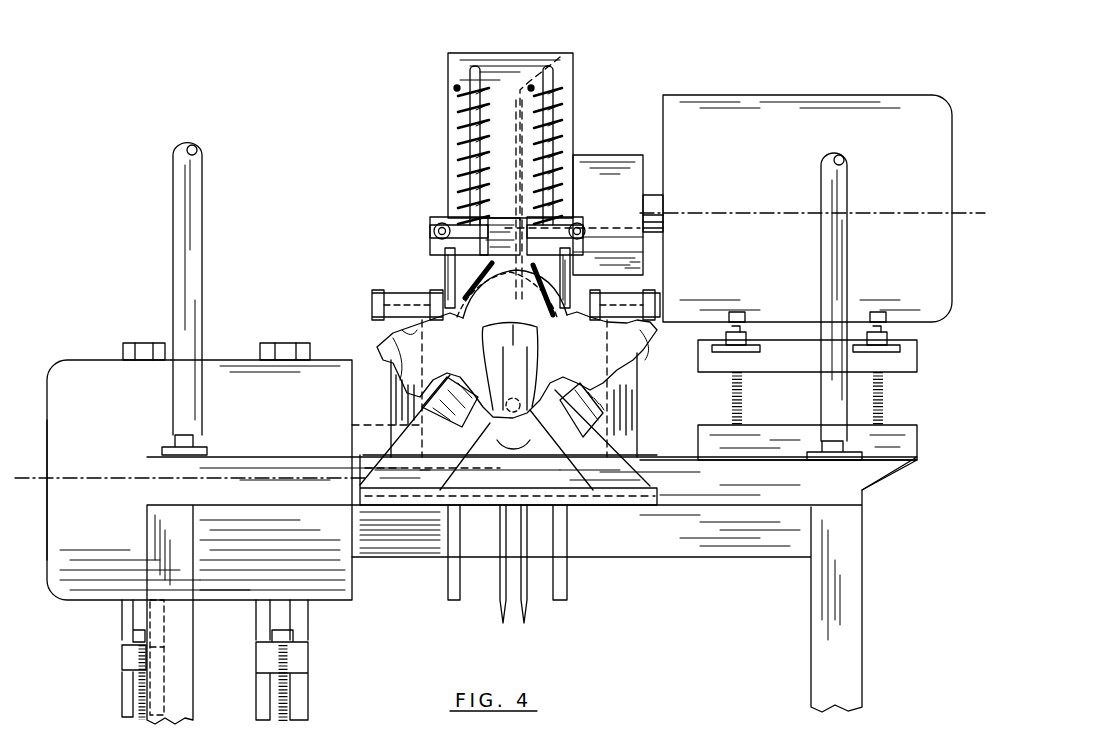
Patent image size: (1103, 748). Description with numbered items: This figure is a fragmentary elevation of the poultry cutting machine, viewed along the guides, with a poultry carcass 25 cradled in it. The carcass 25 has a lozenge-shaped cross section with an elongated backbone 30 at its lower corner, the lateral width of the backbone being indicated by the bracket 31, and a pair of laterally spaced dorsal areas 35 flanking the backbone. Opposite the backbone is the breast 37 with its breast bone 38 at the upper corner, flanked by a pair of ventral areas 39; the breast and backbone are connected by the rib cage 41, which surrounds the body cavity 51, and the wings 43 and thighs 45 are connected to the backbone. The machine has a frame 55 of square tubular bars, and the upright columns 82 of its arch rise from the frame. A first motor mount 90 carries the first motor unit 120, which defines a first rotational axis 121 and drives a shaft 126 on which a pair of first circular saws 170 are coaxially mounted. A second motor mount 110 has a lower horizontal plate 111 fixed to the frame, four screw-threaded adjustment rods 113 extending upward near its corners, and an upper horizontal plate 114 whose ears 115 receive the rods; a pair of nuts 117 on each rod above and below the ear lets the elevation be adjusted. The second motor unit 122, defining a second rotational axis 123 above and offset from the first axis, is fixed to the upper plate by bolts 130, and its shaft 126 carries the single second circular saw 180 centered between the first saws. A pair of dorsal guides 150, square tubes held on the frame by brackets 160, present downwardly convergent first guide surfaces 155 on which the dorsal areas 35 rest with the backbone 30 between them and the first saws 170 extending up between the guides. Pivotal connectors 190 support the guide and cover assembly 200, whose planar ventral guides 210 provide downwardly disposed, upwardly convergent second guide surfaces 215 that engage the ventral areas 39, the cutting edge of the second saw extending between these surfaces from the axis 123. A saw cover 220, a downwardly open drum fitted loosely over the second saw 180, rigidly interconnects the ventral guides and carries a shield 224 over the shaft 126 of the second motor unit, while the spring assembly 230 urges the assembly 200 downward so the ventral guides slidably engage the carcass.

The poultry carcass 25 is at (645, 384).
The backbone 30 is at (500, 407).
The width of backbone 31 is at (545, 345).
The dorsal areas 35 is at (522, 440).
The breast 37 is at (598, 244).
The breast bone 38 is at (578, 266).
The ventral areas 39 is at (477, 263).
The rib cage 41 is at (432, 282).
The wings 43 is at (380, 322).
The thighs 45 is at (382, 330).
The body cavity 51 is at (497, 343).
The frame 55 is at (868, 582).
The upright columns 82 is at (199, 198).
The first motor mount 90 is at (113, 665).
The second motor mount 110 is at (920, 447).
The lower horizontal plate 111 is at (890, 455).
The adjustment rods 113 is at (872, 403).
The upper horizontal plate 114 is at (907, 360).
The ears 115 is at (865, 335).
The nuts 117 is at (745, 343).
The first motor unit 120 is at (78, 350).
The first rotational axis 121 is at (65, 478).
The second motor unit 122 is at (921, 88).
The second rotational axis 123 is at (947, 213).
The shaft 126 is at (652, 197).
The bolts 130 is at (735, 312).
The dorsal guides 150 is at (440, 420).
The first guide surfaces 155 is at (511, 388).
The brackets 160 is at (583, 508).
The first circular saws 170 is at (492, 600).
The second circular saw 180 is at (575, 58).
The pivotal connectors 190 is at (380, 282).
The guide and cover assembly 200 is at (580, 134).
The ventral guides 210 is at (430, 230).
The second guide surfaces 215 is at (515, 310).
The saw cover 220 is at (508, 64).
The shield 224 is at (626, 164).
The spring assembly 230 is at (446, 127).